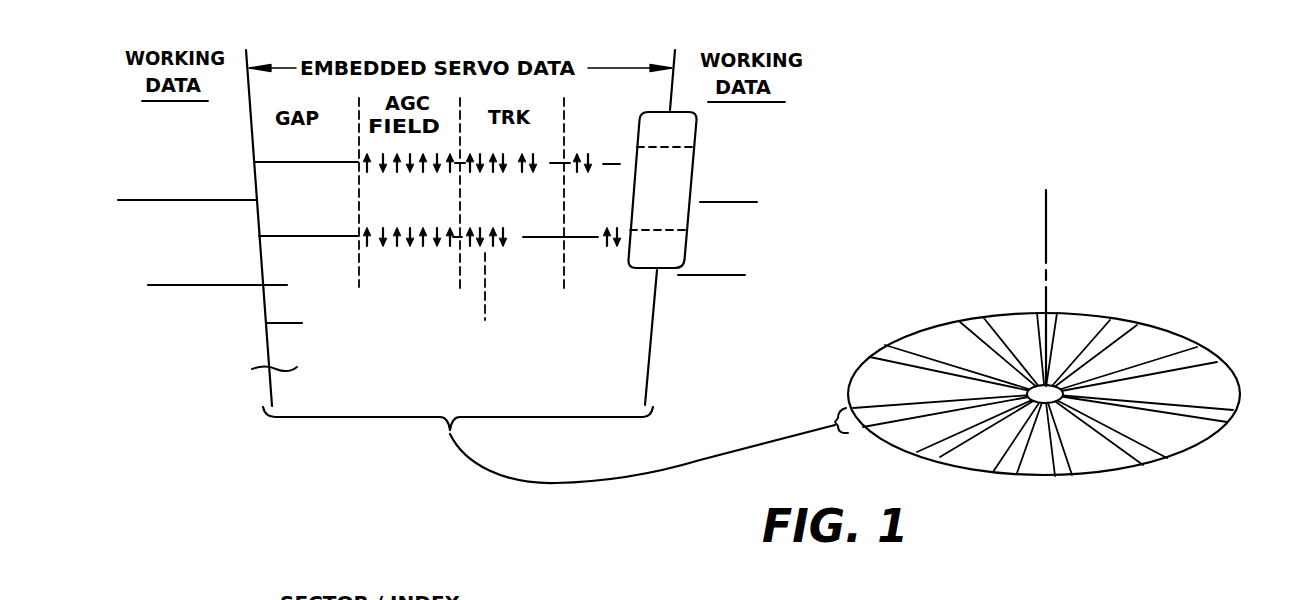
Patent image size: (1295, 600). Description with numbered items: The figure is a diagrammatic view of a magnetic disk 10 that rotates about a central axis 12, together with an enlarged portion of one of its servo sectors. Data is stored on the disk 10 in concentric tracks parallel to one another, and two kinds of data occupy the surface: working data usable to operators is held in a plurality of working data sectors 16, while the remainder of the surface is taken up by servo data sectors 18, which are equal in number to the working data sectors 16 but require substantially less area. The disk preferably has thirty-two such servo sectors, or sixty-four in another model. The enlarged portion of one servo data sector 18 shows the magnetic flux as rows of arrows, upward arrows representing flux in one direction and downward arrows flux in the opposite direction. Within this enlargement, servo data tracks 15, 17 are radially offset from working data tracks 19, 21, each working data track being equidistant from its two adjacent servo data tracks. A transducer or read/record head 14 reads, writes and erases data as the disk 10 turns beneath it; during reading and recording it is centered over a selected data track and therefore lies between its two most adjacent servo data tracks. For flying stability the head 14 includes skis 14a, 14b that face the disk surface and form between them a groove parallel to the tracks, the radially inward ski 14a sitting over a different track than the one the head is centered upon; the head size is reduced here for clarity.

The magnetic disk 10 is at (1080, 327).
The central axis 12 is at (1048, 211).
The transducer or read/record head 14 is at (696, 193).
The radially inward ski 14a is at (688, 247).
The ski 14b is at (686, 130).
The servo data track 15 is at (280, 162).
The working data sectors 16 is at (948, 330).
The servo data track 17 is at (280, 236).
The servo data sectors 18 is at (1232, 325).
The working data track 19 is at (192, 200).
The working data track 21 is at (208, 285).